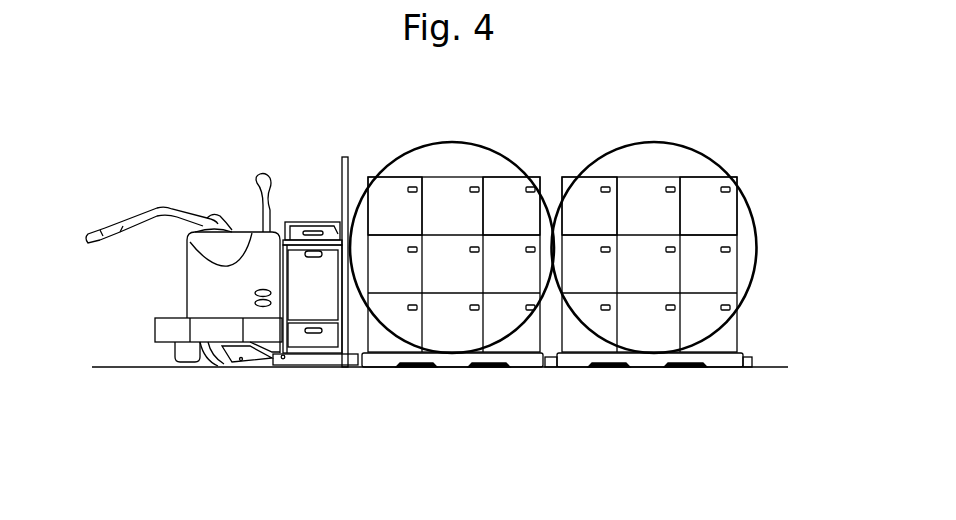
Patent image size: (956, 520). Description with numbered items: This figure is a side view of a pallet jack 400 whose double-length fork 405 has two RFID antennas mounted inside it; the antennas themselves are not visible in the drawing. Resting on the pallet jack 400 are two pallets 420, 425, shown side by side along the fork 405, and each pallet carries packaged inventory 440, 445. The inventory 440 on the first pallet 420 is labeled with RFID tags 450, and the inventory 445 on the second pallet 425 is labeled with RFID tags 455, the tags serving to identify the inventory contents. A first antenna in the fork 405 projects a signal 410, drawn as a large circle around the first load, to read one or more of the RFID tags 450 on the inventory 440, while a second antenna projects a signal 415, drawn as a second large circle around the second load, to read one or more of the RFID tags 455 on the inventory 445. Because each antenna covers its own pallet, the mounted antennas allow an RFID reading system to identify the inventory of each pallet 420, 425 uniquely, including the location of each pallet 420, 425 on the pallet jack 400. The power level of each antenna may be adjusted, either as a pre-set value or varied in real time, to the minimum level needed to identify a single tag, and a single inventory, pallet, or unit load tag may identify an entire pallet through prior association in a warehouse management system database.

The pallet jack 400 is at (187, 287).
The fork 405 is at (747, 358).
The signal 410 is at (448, 142).
The signal 415 is at (640, 142).
The pallet 420 is at (455, 361).
The pallet 425 is at (652, 361).
The packaged inventory 440 is at (469, 284).
The packaged inventory 445 is at (663, 284).
The RFID tags 450 is at (408, 190).
The RFID tags 455 is at (602, 190).